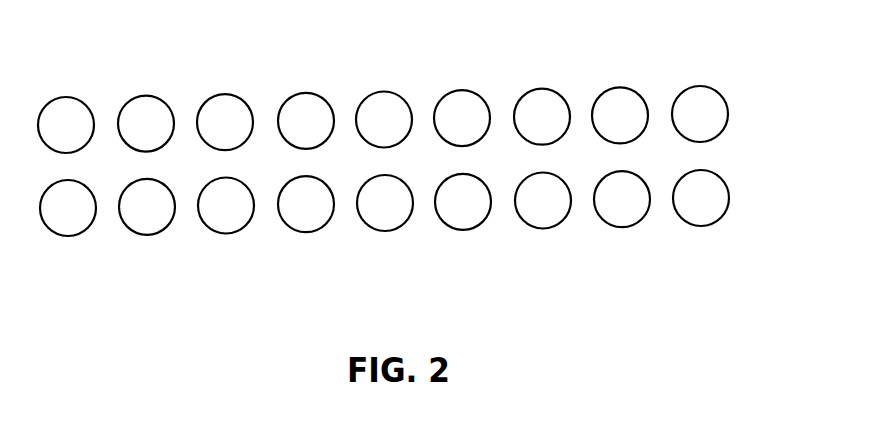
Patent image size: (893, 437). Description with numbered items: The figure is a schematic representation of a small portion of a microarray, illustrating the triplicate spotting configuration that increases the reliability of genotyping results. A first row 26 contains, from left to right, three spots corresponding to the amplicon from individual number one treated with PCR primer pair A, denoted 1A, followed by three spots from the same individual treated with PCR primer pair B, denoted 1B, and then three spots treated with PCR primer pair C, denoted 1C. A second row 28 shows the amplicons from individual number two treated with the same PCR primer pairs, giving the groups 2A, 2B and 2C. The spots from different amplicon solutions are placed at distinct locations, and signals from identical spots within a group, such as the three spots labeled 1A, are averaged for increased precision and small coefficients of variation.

The triplicate spots of amplicon from individual one treated with PCR primer pair A 1A is at (42, 88).
The triplicate spots of amplicon from individual one treated with PCR primer pair B 1B is at (280, 85).
The triplicate spots of amplicon from individual one treated with PCR primer pair C 1C is at (621, 81).
The triplicate spots of amplicon from individual two treated with PCR primer pair A 2A is at (46, 242).
The triplicate spots of amplicon from individual two treated with PCR primer pair B 2B is at (488, 237).
The triplicate spots of amplicon from individual two treated with PCR primer pair C 2C is at (622, 234).
The first row 26 is at (428, 85).
The row 28 is at (431, 230).